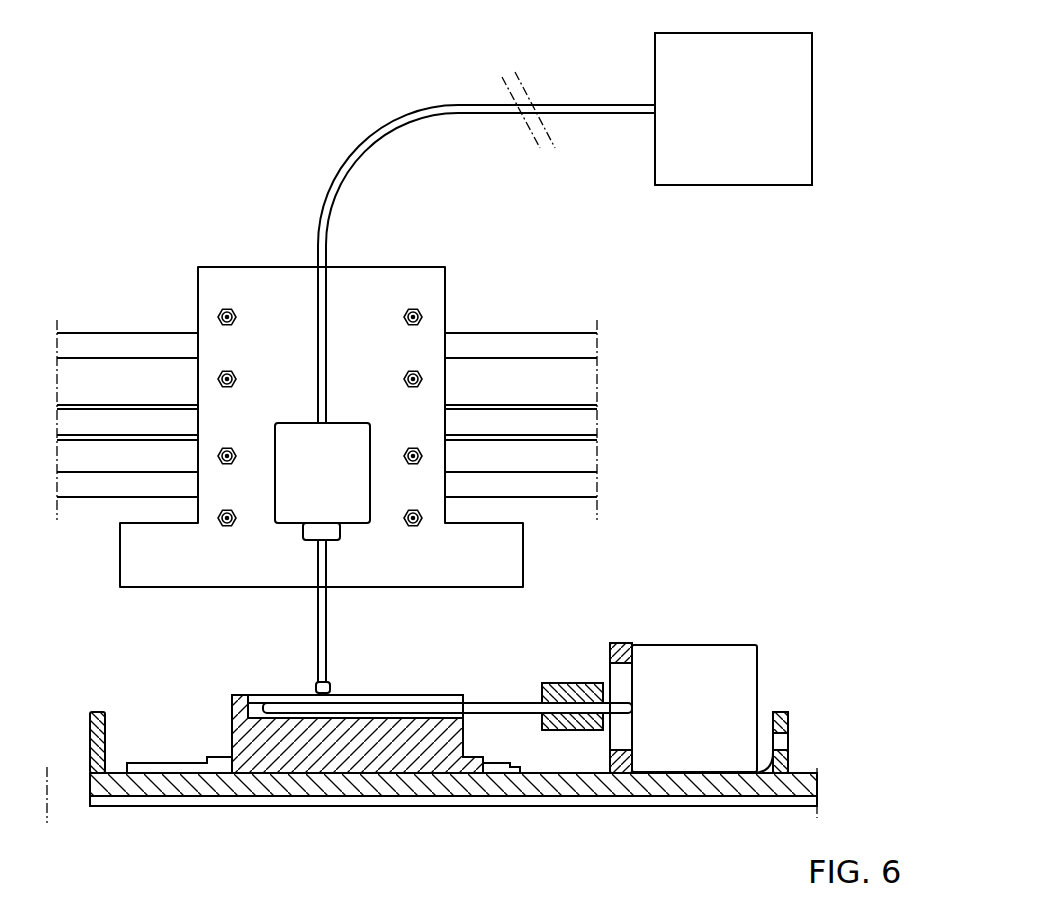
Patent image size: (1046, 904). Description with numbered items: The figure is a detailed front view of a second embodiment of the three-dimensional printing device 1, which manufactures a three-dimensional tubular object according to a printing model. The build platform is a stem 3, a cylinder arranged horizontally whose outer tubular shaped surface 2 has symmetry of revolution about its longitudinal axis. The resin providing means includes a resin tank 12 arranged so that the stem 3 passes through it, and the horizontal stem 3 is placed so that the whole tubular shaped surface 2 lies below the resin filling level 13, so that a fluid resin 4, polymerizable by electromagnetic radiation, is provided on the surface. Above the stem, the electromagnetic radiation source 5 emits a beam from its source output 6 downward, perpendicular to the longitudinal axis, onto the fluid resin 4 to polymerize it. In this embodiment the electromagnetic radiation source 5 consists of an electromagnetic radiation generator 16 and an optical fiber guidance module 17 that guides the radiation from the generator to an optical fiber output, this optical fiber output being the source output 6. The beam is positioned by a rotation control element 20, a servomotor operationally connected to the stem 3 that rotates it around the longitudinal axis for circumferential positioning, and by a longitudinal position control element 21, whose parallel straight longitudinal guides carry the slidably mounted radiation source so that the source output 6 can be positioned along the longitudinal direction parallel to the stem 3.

The 3D printing device 1 is at (178, 98).
The tubular shaped surface 2 is at (409, 697).
The stem 3 is at (515, 713).
The fluid resin 4 is at (262, 718).
The electromagnetic radiation source 5 is at (288, 408).
The source output 6 is at (312, 694).
The resin tank 12 is at (313, 743).
The resin filling level 13 is at (255, 692).
The electromagnetic radiation generator 16 is at (722, 147).
The optical fiber guidance module 17 is at (304, 442).
The rotation control element 20 is at (733, 645).
The longitudinal position control element 21 is at (151, 322).